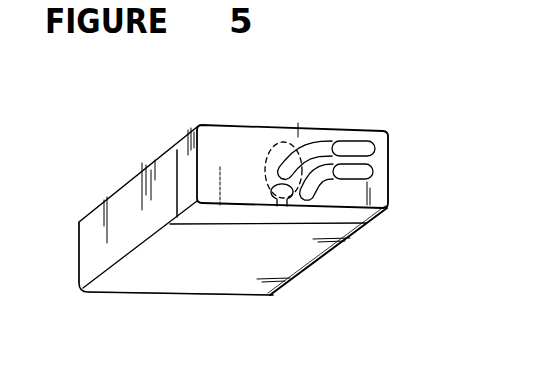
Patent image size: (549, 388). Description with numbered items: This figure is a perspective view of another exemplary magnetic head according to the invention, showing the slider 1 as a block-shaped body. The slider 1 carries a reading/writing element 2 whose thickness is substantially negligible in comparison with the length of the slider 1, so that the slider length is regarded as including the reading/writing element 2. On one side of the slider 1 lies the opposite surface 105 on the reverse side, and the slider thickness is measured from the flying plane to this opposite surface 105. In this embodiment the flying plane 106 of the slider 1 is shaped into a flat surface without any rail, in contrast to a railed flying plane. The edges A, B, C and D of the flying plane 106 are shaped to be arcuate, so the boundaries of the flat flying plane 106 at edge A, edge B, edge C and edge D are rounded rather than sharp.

The slider 1 is at (142, 200).
The reading/writing element 2 is at (272, 196).
The opposite surface 105 is at (325, 130).
The flying plane 106 is at (140, 257).
The edge A is at (260, 297).
The edge B is at (343, 205).
The edge C is at (115, 262).
The edge D is at (340, 245).